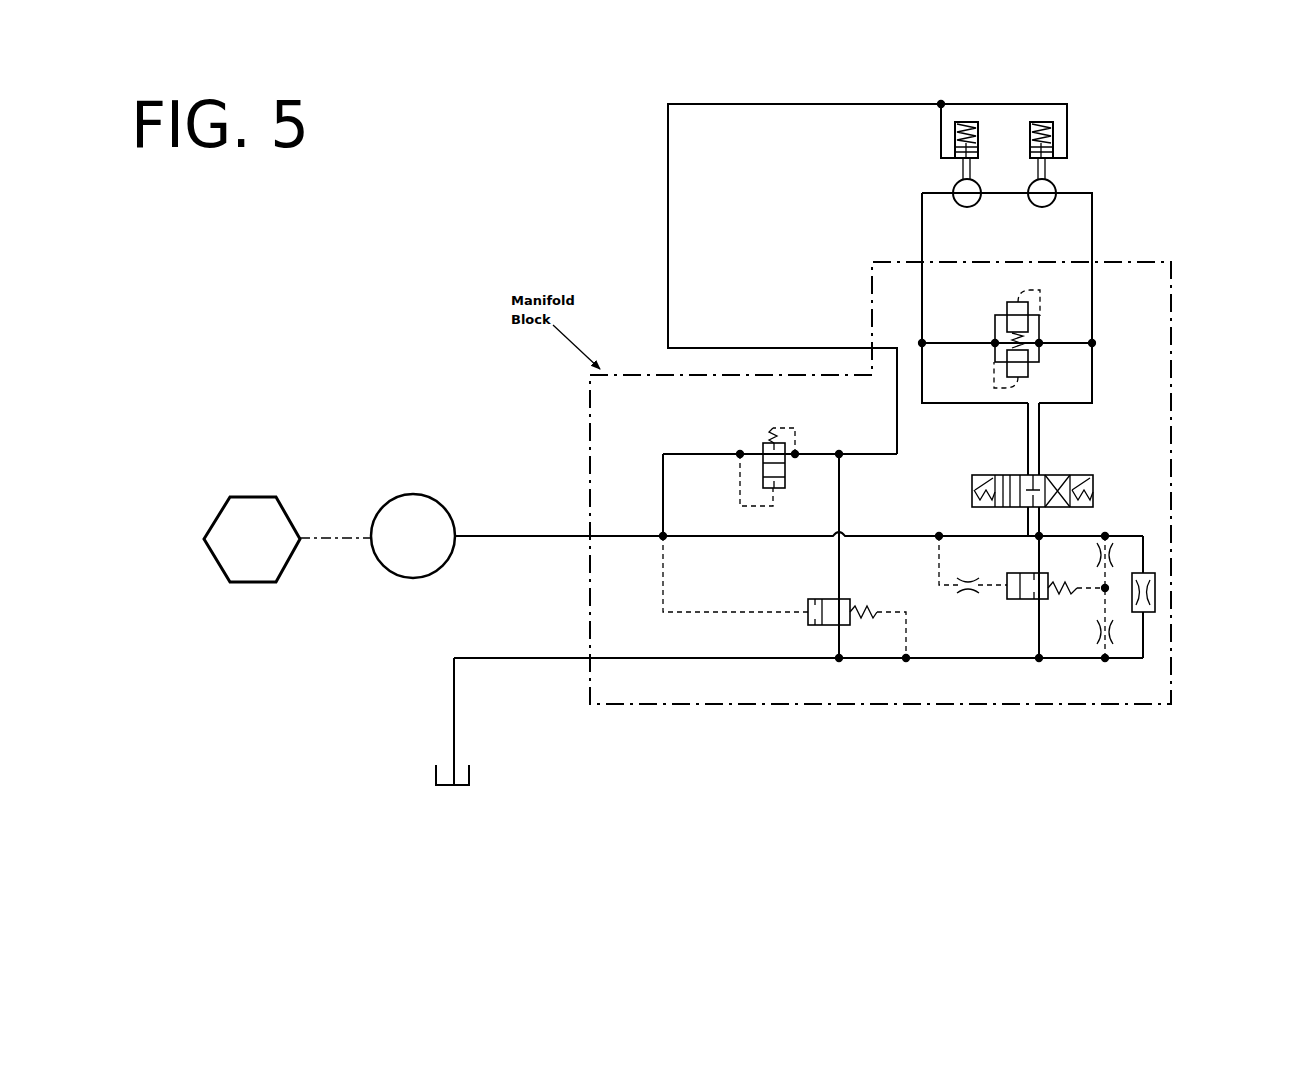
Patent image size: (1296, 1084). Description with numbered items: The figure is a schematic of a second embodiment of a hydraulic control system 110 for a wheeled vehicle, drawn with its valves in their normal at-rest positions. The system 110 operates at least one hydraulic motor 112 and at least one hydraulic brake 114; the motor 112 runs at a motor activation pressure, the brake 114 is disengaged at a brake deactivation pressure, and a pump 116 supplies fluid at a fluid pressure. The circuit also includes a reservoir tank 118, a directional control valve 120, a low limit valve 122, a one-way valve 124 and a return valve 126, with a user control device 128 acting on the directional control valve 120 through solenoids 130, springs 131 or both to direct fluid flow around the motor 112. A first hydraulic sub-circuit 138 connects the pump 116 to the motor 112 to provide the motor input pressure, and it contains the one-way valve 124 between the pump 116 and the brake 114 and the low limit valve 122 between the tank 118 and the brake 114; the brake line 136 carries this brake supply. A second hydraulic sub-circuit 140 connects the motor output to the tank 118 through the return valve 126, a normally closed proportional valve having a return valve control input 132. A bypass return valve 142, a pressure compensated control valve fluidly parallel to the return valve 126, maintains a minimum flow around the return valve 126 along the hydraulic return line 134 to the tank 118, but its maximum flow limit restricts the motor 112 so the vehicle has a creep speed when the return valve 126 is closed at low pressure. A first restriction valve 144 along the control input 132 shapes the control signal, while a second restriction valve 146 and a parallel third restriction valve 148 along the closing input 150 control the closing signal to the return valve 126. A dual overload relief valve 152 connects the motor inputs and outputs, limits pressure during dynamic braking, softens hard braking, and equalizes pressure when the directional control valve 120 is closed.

The hydraulic control system 110 is at (322, 320).
The hydraulic motor 112 is at (955, 185).
The hydraulic brake 114 is at (1033, 121).
The pump 116 is at (395, 495).
The reservoir tank 118 is at (425, 774).
The directional control valve 120 is at (1117, 431).
The low limit valve 122 is at (825, 627).
The one-way valve 124 is at (761, 442).
The return valve 126 is at (1049, 600).
The user control device 128 is at (232, 584).
The solenoids 130 is at (1094, 473).
The springs 131 is at (773, 431).
The return valve control input 132 is at (967, 597).
The hydraulic return line 134 is at (668, 660).
The brake line 136 is at (664, 133).
The first hydraulic sub-circuit 138 is at (952, 518).
The second hydraulic sub-circuit 140 is at (1159, 535).
The bypass return valve 142 is at (1155, 613).
The first restriction valve 144 is at (977, 596).
The second restriction valve 146 is at (1110, 637).
The third restriction valve 148 is at (1113, 577).
The closing input 150 is at (1083, 595).
The dual overload relief valve 152 is at (1056, 318).